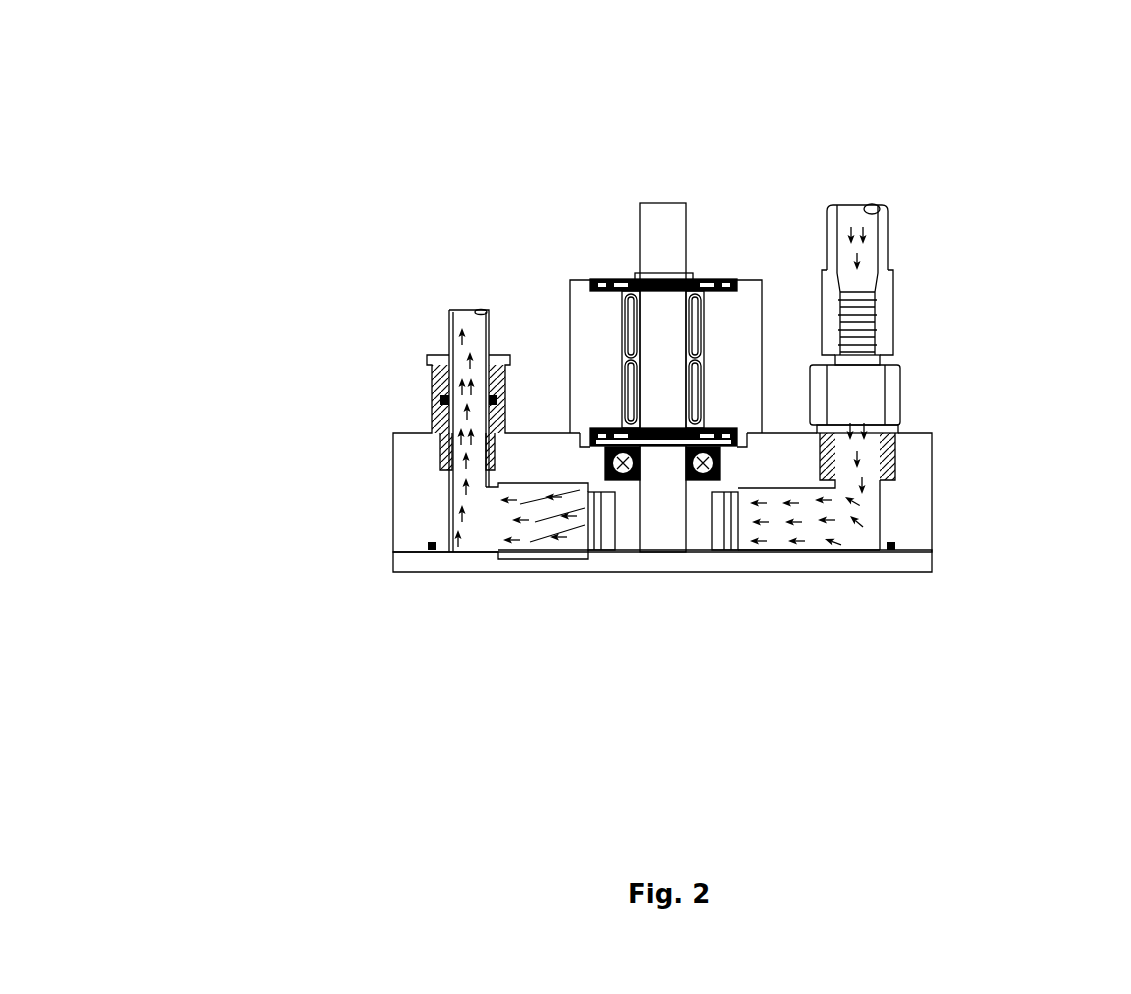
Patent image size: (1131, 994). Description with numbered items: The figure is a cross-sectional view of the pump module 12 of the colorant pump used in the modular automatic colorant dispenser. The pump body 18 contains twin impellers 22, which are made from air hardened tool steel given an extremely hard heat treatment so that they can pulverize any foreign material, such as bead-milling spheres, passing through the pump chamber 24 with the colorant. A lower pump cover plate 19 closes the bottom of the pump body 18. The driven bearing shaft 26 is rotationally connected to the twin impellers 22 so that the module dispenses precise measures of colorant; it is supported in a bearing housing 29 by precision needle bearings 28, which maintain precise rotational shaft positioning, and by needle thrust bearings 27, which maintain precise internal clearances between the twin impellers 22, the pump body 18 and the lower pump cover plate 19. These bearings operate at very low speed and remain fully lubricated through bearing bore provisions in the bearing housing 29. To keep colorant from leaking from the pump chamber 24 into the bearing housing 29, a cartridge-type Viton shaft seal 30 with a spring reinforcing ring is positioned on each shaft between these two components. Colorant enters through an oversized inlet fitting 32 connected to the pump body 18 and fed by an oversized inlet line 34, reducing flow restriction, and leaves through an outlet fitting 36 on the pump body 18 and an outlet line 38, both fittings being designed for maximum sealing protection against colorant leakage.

The pump module 12 is at (341, 110).
The pump body 18 is at (903, 515).
The lower pump cover plate 19 is at (410, 558).
The twin impellers 22 is at (707, 523).
The pump chamber 24 is at (527, 530).
The bearing shaft 26 is at (667, 247).
The needle thrust bearings 27 is at (598, 282).
The needle bearings 28 is at (628, 412).
The bearing housing 29 is at (763, 315).
The shaft seal 30 is at (620, 478).
The inlet fitting 32 is at (873, 392).
The inlet line 34 is at (885, 233).
The outlet fitting 36 is at (428, 390).
The outlet line 38 is at (450, 312).